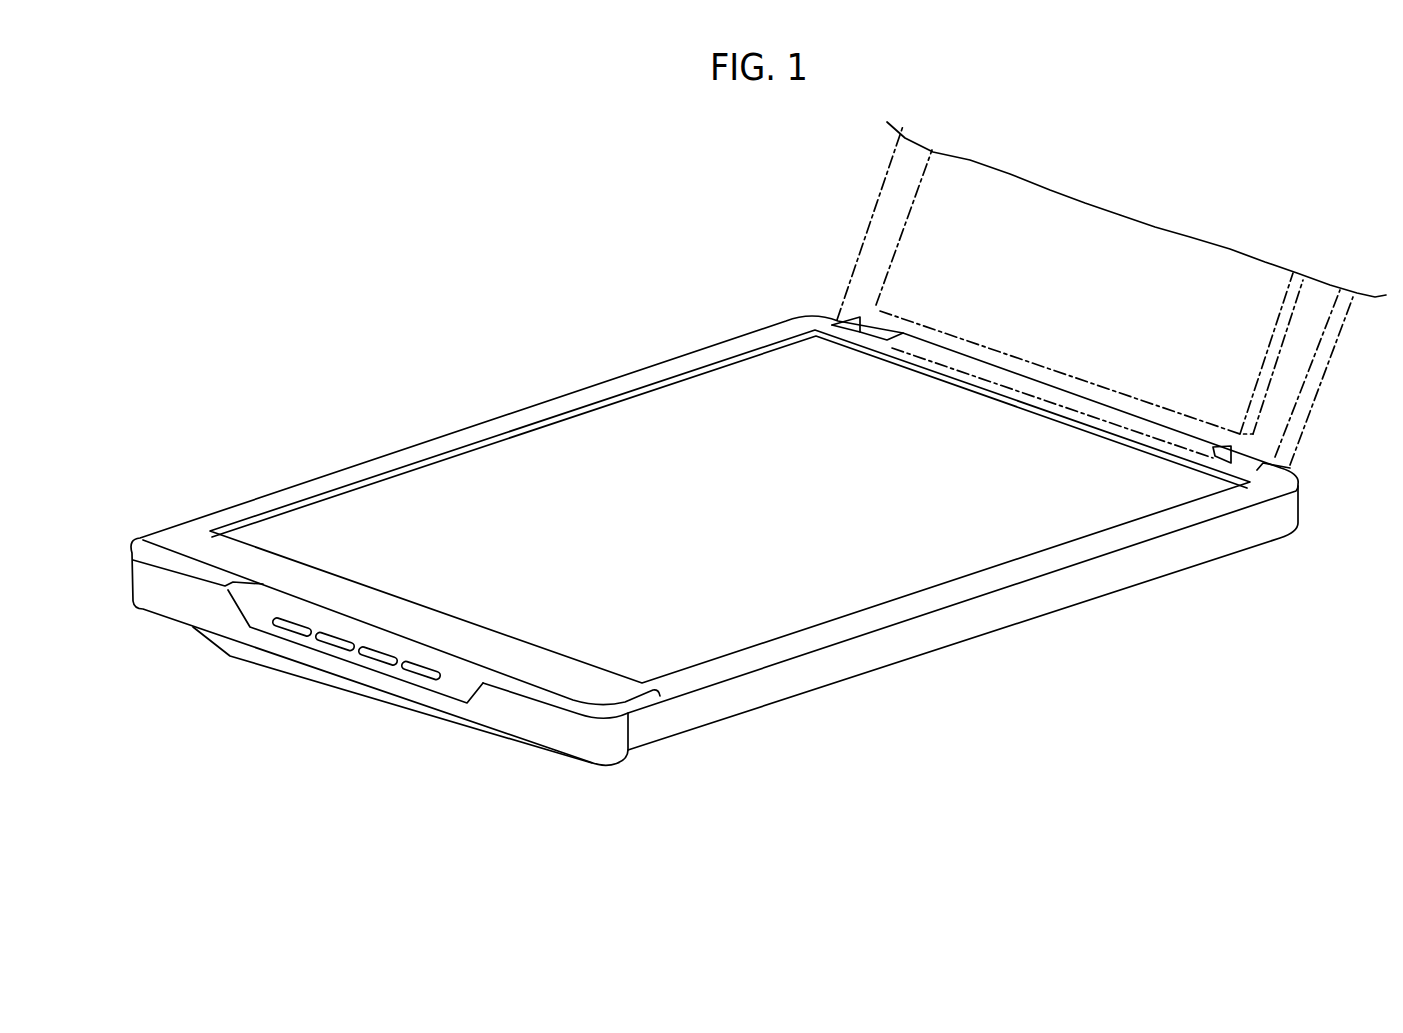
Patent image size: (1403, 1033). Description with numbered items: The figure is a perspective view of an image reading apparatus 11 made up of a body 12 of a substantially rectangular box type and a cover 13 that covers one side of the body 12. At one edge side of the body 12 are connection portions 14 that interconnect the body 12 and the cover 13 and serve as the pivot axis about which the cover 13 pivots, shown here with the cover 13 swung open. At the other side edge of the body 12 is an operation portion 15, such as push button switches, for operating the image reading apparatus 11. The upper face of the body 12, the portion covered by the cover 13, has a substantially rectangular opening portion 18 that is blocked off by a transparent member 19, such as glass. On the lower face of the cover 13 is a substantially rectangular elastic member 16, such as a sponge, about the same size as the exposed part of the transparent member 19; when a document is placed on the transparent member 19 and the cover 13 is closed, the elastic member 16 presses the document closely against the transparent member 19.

The image reading apparatus 11 is at (505, 248).
The body 12 is at (350, 468).
The cover 13 is at (860, 241).
The connection portions 14 is at (888, 338).
The operation portion 15 is at (420, 677).
The elastic member 16 is at (920, 182).
The opening portion 18 is at (605, 400).
The transparent member 19 is at (732, 388).